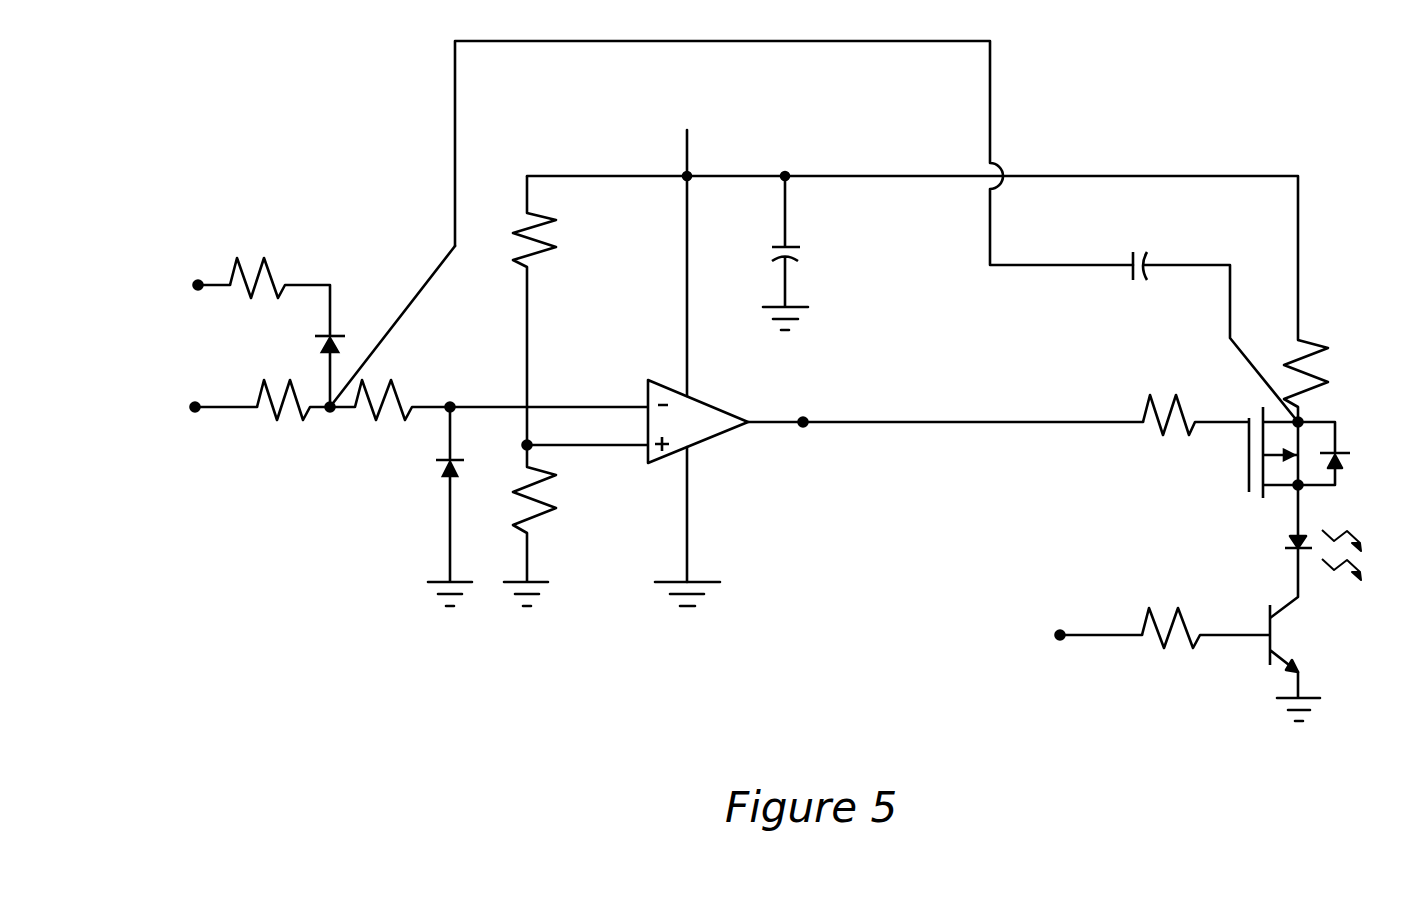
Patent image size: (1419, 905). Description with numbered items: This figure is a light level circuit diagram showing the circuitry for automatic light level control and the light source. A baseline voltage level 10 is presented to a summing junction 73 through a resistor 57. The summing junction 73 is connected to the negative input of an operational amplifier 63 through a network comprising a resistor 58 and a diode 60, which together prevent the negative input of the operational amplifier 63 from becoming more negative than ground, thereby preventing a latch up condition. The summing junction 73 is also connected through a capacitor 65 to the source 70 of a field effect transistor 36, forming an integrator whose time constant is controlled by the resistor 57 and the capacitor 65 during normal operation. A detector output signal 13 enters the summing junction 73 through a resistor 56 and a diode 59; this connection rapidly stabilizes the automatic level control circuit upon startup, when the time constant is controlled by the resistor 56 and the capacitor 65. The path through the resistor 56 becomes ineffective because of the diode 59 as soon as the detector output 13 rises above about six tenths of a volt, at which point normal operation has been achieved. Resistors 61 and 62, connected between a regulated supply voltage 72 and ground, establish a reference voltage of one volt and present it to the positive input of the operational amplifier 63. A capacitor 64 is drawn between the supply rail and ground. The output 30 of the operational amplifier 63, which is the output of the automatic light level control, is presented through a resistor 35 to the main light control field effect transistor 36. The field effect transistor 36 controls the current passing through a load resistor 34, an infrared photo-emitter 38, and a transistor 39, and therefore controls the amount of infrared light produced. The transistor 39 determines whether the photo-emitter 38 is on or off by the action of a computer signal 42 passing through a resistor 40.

The baseline voltage level 10 is at (192, 407).
The detector output signal 13 is at (198, 281).
The output 30 is at (806, 419).
The load resistor 34 is at (1328, 350).
The resistor 35 is at (1182, 392).
The field effect transistor 36 is at (1247, 447).
The infrared photo-emitter 38 is at (1283, 548).
The transistor 39 is at (1268, 629).
The resistor 40 is at (1182, 606).
The computer signal 42 is at (1060, 631).
The resistor 56 is at (270, 256).
The resistor 57 is at (297, 380).
The resistor 58 is at (397, 381).
The diode 59 is at (338, 331).
The diode 60 is at (432, 462).
The resistor 61 is at (553, 233).
The resistor 62 is at (562, 490).
The operational amplifier 63 is at (710, 402).
The capacitor 64 is at (800, 252).
The capacitor 65 is at (1143, 252).
The source 70 is at (1301, 421).
The regulated supply voltage 72 is at (685, 96).
The summing junction 73 is at (326, 418).